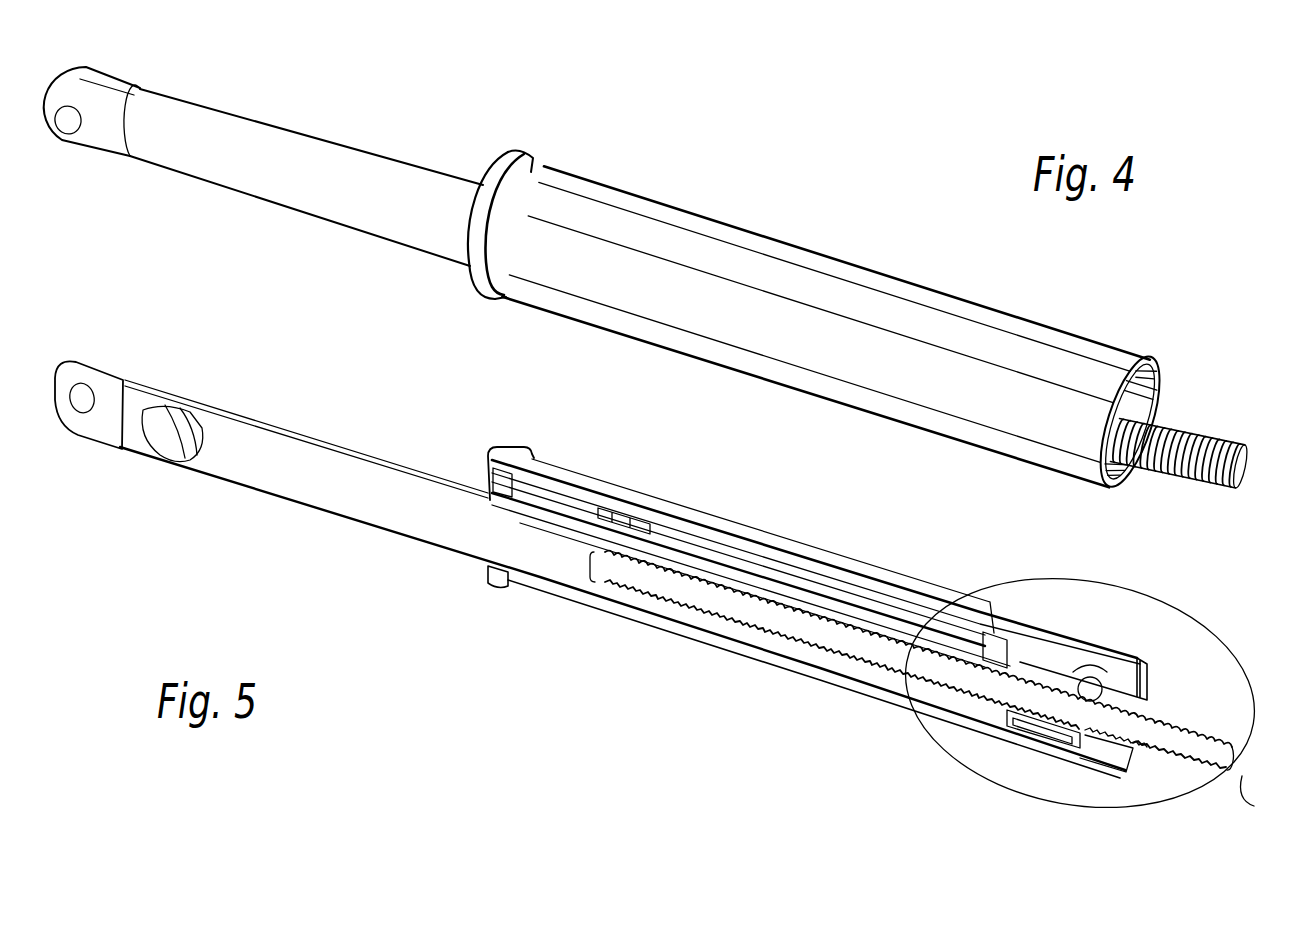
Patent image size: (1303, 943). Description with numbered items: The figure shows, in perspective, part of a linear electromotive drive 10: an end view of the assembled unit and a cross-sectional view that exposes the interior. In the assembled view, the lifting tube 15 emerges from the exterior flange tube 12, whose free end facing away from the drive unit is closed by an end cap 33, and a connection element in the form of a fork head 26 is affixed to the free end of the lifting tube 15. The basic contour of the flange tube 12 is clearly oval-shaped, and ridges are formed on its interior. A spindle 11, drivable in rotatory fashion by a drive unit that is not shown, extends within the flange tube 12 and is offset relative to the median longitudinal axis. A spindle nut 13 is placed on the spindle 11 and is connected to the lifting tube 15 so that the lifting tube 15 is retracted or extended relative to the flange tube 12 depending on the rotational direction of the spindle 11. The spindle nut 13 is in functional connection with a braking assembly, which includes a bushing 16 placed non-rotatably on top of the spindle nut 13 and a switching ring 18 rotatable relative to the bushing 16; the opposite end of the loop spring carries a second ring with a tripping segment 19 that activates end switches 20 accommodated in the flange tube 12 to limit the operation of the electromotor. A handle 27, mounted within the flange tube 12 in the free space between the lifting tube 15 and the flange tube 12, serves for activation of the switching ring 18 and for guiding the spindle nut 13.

In FIG. 4, the linear drive 10 is at (647, 282).
In FIG. 5, the linear drive 10 is at (671, 565).
In FIG. 4, the spindle 11 is at (1198, 438).
In FIG. 5, the spindle 11 is at (1190, 747).
In FIG. 4, the flange tube 12 is at (722, 295).
In FIG. 5, the spindle nut 13 is at (1025, 688).
In FIG. 4, the lifting tube 15 is at (302, 178).
In FIG. 5, the lifting tube 15 is at (262, 428).
In FIG. 5, the bushing 16 is at (1107, 660).
In FIG. 5, the switching ring 18 is at (1100, 665).
In FIG. 5, the tripping segment 19 is at (1022, 660).
In FIG. 5, the end switches 20 is at (617, 517).
In FIG. 4, the fork head 26 is at (105, 125).
In FIG. 5, the fork head 26 is at (104, 390).
In FIG. 5, the handle 27 is at (1010, 606).
In FIG. 4, the end cap 33 is at (515, 158).
In FIG. 5, the end cap 33 is at (503, 460).